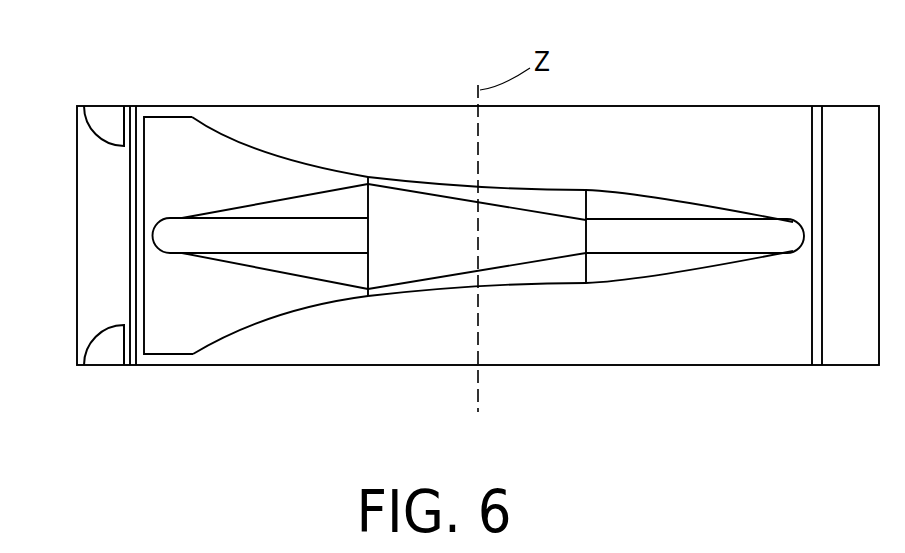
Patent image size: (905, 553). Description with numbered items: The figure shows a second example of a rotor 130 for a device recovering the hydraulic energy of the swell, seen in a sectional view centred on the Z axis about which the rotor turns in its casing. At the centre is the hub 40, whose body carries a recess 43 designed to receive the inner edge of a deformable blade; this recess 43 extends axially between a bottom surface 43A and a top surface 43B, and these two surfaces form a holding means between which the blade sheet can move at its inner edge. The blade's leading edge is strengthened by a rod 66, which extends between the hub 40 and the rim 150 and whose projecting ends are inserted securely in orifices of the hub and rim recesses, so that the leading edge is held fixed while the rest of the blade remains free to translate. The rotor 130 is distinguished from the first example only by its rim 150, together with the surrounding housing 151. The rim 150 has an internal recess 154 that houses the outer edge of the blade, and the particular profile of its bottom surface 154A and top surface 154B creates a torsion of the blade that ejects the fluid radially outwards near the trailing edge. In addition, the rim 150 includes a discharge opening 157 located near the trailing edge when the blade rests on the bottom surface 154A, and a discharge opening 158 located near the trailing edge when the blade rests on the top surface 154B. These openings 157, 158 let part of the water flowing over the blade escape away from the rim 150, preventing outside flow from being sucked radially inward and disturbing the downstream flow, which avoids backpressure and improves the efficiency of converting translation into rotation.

The rotor 130 is at (91, 33).
The rim 150 is at (100, 248).
The housing body 151 is at (337, 122).
The internal recess 154 is at (365, 242).
The bottom surface 154A is at (250, 318).
The top surface 154B is at (211, 136).
The discharge opening 157 is at (110, 350).
The discharge opening 158 is at (108, 120).
The hub 40 is at (420, 236).
The recess 43 is at (513, 231).
The bottom surface 43A is at (400, 281).
The top surface 43B is at (398, 193).
The rod 66 is at (165, 238).